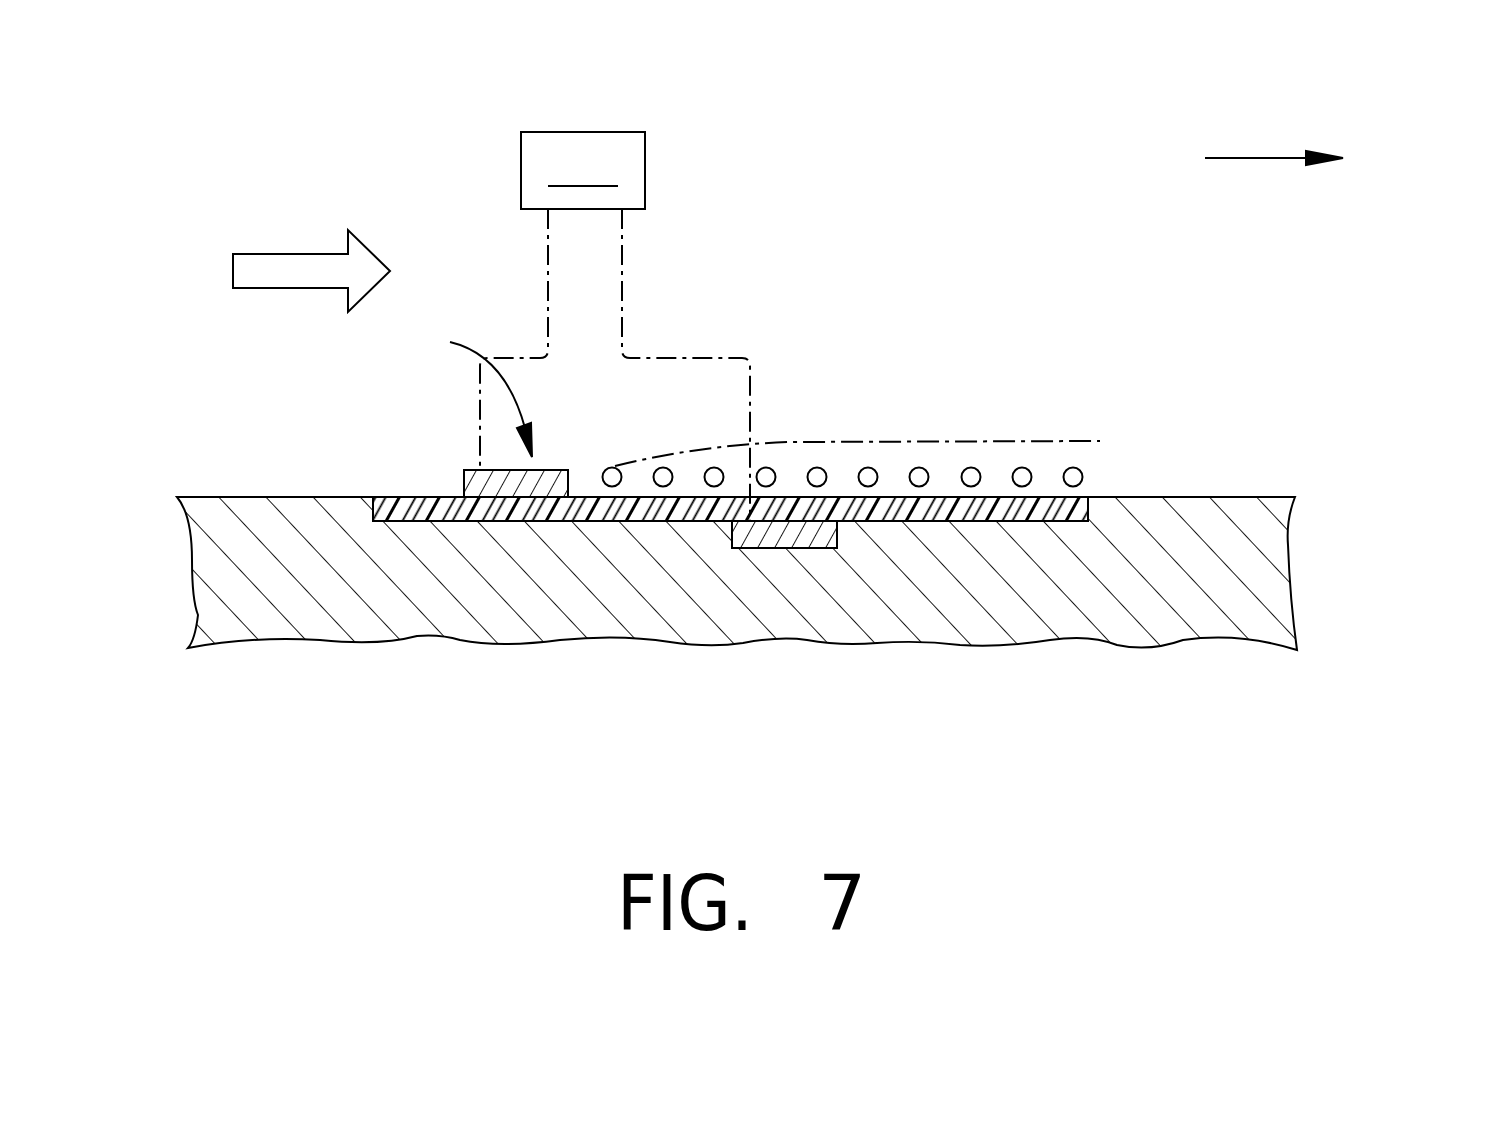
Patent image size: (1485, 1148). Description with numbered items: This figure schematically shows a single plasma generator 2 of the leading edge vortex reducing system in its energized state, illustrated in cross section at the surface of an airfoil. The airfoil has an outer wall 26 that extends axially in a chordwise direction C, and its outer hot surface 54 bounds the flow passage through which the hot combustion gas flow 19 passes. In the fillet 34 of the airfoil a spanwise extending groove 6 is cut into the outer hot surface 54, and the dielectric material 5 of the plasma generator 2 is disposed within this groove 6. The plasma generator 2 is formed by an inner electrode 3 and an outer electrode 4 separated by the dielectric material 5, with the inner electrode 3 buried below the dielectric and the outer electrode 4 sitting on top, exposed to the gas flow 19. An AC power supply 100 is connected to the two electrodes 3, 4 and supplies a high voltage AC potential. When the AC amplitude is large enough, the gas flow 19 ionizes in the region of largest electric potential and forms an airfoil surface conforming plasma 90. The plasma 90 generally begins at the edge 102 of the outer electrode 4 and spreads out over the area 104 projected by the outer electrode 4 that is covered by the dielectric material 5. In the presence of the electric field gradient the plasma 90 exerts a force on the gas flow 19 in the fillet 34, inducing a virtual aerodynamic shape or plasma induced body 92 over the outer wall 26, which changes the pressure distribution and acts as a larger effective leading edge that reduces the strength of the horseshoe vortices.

The plasma generator 2 is at (477, 388).
The inner electrode 3 is at (767, 549).
The outer electrode 4 is at (478, 470).
The dielectric material 5 is at (600, 522).
The groove 6 is at (385, 497).
The gas flow 19 is at (290, 253).
The outer wall 26 is at (1290, 574).
The fillet 34 is at (247, 497).
The outer hot surface 54 is at (287, 497).
The plasma 90 is at (1077, 467).
The plasma induced body 92 is at (828, 440).
The AC power supply 100 is at (615, 326).
The edge 102 is at (570, 472).
The area 104 is at (888, 497).
The chordwise direction C is at (1272, 157).